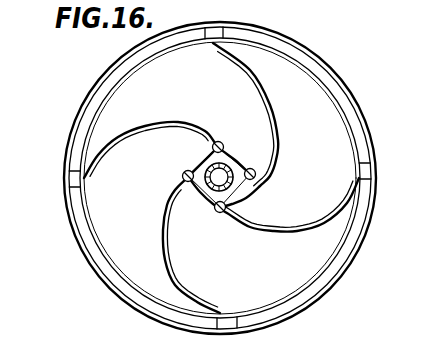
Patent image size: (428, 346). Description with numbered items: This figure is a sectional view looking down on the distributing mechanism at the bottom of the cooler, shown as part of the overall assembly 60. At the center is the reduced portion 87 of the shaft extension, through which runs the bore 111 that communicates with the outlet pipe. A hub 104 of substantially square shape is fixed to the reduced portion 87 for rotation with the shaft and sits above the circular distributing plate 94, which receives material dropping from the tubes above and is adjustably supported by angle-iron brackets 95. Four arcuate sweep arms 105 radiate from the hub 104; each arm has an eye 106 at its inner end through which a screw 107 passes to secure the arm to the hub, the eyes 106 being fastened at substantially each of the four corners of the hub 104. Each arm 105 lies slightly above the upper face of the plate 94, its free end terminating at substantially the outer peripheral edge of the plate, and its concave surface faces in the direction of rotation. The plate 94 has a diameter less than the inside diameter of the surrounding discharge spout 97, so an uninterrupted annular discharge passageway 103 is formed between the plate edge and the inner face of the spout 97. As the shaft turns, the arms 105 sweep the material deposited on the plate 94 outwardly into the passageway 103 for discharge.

The fan assembly 60 is at (408, 4).
The reduced portion of the shaft extension 87 is at (241, 156).
The distributing plate 94 is at (326, 108).
The brackets 95 is at (83, 186).
The discharge spout 97 is at (80, 111).
The annular discharge passageway 103 is at (84, 140).
The hub 104 is at (236, 140).
The sweep arms 105 is at (143, 128).
The eye 106 is at (211, 146).
The screw 107 is at (258, 175).
The bore 111 is at (195, 187).